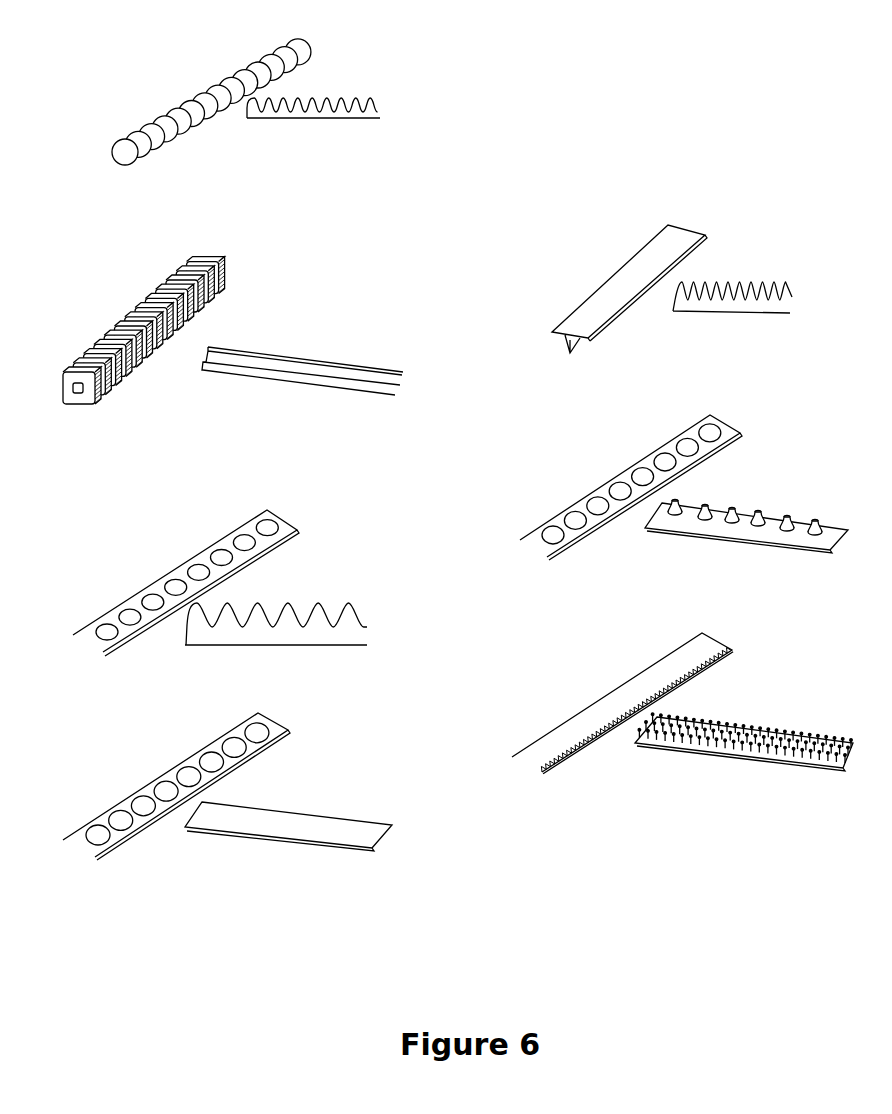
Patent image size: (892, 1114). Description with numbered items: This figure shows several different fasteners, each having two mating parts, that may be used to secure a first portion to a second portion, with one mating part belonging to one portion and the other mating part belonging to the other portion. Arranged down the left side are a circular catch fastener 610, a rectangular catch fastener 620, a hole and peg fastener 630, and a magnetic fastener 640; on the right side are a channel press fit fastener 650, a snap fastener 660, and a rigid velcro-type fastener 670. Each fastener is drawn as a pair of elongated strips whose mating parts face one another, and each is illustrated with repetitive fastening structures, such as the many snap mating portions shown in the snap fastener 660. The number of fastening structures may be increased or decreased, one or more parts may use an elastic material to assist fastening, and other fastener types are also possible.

The circular catch fastener 610 is at (137, 53).
The rectangular catch fastener 620 is at (132, 268).
The hole and peg fastener 630 is at (122, 548).
The magnetic fastener 640 is at (110, 743).
The channel press fit fastener 650 is at (543, 250).
The snap fastener 660 is at (545, 458).
The rigid velcro-type fastener 670 is at (542, 665).